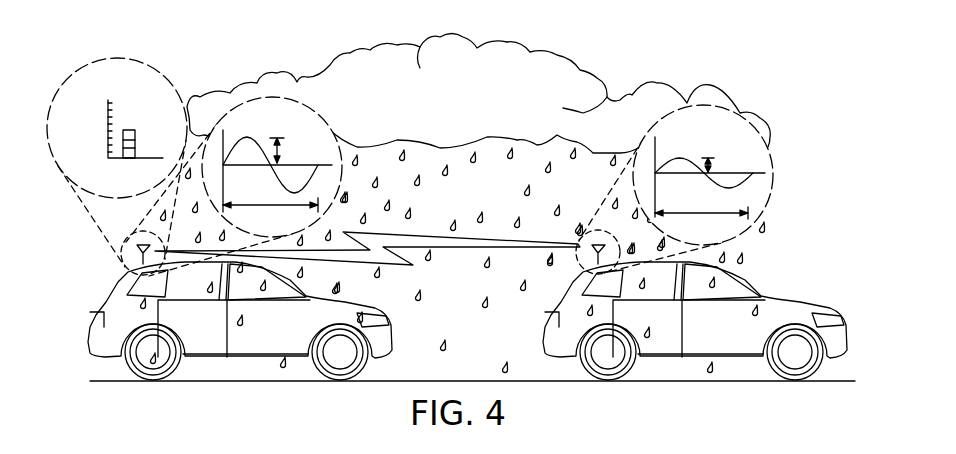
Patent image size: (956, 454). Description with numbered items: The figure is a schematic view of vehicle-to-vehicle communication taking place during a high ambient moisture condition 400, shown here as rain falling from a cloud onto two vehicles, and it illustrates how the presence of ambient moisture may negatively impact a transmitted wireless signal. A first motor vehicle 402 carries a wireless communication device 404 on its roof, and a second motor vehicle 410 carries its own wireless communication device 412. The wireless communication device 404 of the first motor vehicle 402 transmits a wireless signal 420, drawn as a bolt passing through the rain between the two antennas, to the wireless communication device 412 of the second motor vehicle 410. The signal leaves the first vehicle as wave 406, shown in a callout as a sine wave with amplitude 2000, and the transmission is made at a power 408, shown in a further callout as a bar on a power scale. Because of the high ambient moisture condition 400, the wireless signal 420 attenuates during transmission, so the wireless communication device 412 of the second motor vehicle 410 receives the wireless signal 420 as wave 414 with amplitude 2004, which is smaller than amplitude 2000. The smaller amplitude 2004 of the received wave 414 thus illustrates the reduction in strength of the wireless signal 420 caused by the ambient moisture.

The high ambient moisture condition 400 is at (437, 203).
The first motor vehicle 402 is at (100, 292).
The wireless communication device 404 is at (122, 246).
The wave 406 is at (272, 136).
The power 408 is at (180, 90).
The second motor vehicle 410 is at (787, 302).
The wireless communication device 412 is at (604, 230).
The wave 414 is at (737, 175).
The wireless signal 420 is at (460, 247).
The amplitude 2000 is at (301, 151).
The amplitude 2004 is at (734, 160).